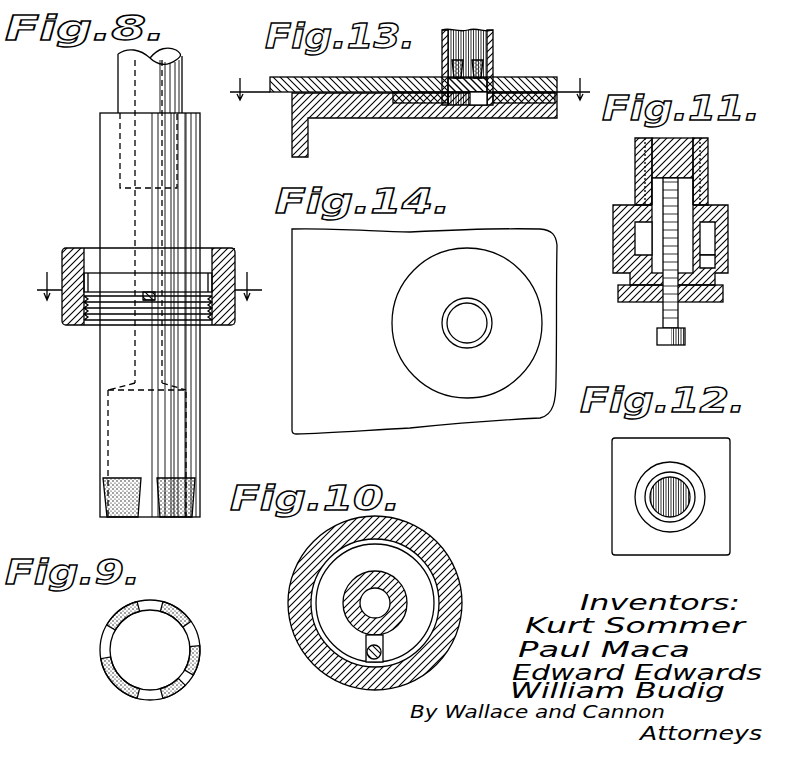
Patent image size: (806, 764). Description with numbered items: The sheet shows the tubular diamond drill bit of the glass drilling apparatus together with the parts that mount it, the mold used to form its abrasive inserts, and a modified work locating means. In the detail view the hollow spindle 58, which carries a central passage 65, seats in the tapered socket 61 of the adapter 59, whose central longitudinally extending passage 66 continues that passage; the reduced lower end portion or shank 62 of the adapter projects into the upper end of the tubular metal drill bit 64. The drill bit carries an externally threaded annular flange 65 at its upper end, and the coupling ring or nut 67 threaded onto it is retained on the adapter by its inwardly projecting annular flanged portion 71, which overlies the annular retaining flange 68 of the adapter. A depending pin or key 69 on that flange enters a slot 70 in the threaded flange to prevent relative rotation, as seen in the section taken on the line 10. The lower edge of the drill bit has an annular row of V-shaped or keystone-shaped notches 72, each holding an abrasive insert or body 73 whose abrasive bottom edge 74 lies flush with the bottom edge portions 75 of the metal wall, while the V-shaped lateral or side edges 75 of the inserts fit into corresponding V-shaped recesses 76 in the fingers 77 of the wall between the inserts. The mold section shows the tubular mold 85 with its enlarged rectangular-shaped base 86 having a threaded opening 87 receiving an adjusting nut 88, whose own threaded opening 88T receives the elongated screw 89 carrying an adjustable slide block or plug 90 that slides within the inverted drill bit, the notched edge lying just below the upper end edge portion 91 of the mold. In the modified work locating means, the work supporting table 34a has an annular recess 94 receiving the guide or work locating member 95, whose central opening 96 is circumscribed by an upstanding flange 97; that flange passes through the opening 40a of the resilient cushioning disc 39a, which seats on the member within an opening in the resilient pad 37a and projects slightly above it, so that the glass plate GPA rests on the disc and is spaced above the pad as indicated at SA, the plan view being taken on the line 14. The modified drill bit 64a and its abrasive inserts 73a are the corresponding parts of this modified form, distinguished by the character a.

In FIG. 8, the section line 10 is at (147, 277).
In FIG. 13, the section line 14 is at (410, 78).
In FIG. 13, the work supporting table 34a is at (358, 118).
In FIG. 13, the resilient pad 37a is at (556, 104).
In FIG. 14, the resilient pad 37a is at (528, 232).
In FIG. 13, the resilient cushioning disc 39a is at (522, 92).
In FIG. 14, the resilient cushioning disc 39a is at (522, 310).
In FIG. 13, the centrally arranged opening 40a is at (490, 80).
In FIG. 8, the hollow spindle 58 is at (178, 82).
In FIG. 8, the adapter 59 is at (188, 147).
In FIG. 8, the tapered socket 61 is at (118, 144).
In FIG. 10, the reduced lower end portion or shank 62 is at (396, 591).
In FIG. 8, the tubular metal drill bit 64 is at (190, 372).
In FIG. 11, the tubular metal drill bit 64 is at (700, 190).
In FIG. 13, the tube 64a is at (500, 33).
In FIG. 8, the externally threaded annular flange 65 is at (132, 78).
In FIG. 10, the externally threaded annular flange 65 is at (425, 612).
In FIG. 11, the externally threaded annular flange 65 is at (640, 242).
In FIG. 8, the central longitudinally extending passage 66 is at (163, 218).
In FIG. 10, the central longitudinally extending passage 66 is at (380, 598).
In FIG. 8, the coupling ring or nut 67 is at (222, 258).
In FIG. 10, the coupling ring or nut 67 is at (448, 588).
In FIG. 8, the annular retaining flange 68 is at (178, 275).
In FIG. 8, the depending pin or key 69 is at (146, 292).
In FIG. 10, the depending pin or key 69 is at (374, 658).
In FIG. 8, the slot 70 is at (150, 300).
In FIG. 10, the slot 70 is at (366, 640).
In FIG. 8, the inwardly projecting annular flanged portion 71 is at (96, 256).
In FIG. 8, the notches 72 is at (122, 480).
In FIG. 11, the notches 72 is at (652, 150).
In FIG. 8, the abrasive insert or body 73 is at (126, 517).
In FIG. 9, the abrasive insert or body 73 is at (118, 612).
In FIG. 11, the abrasive insert or body 73 is at (645, 142).
In FIG. 12, the abrasive insert or body 73 is at (672, 475).
In FIG. 13, the pad 73a is at (460, 62).
In FIG. 8, the abrasive bottom edge or surface 74 is at (114, 518).
In FIG. 9, the abrasive bottom edge or surface 74 is at (128, 606).
In FIG. 11, the abrasive bottom edge or surface 74 is at (647, 140).
In FIG. 8, the lateral or side edges 75 is at (108, 516).
In FIG. 9, the lateral or side edges 75 is at (224, 616).
In FIG. 8, the V-shaped recesses 76 is at (103, 484).
In FIG. 9, the V-shaped recesses 76 is at (100, 645).
In FIG. 8, the fingers 77 is at (104, 502).
In FIG. 9, the fingers 77 is at (100, 652).
In FIG. 11, the tubular mold 85 is at (706, 168).
In FIG. 11, the rectangular-shaped base 86 is at (724, 230).
In FIG. 12, the rectangular-shaped base 86 is at (712, 456).
In FIG. 11, the threaded opening 87 is at (710, 260).
In FIG. 11, the adjusting nut 88 is at (700, 305).
In FIG. 11, the threaded opening 88T is at (663, 290).
In FIG. 11, the elongated screw 89 is at (678, 344).
In FIG. 11, the adjustable slide block or plug 90 is at (652, 170).
In FIG. 12, the adjustable slide block or plug 90 is at (676, 502).
In FIG. 11, the upper end or end edge portion 91 is at (640, 132).
In FIG. 13, the annular recess 94 is at (540, 104).
In FIG. 13, the guide or work locating member 95 is at (415, 104).
In FIG. 13, the central opening 96 is at (478, 106).
In FIG. 13, the upstanding flange 97 is at (448, 85).
In FIG. 14, the upstanding flange 97 is at (488, 337).
In FIG. 13, the glass plate or like ceramic sheet GPA is at (335, 66).
In FIG. 13, the spacing SA is at (288, 101).